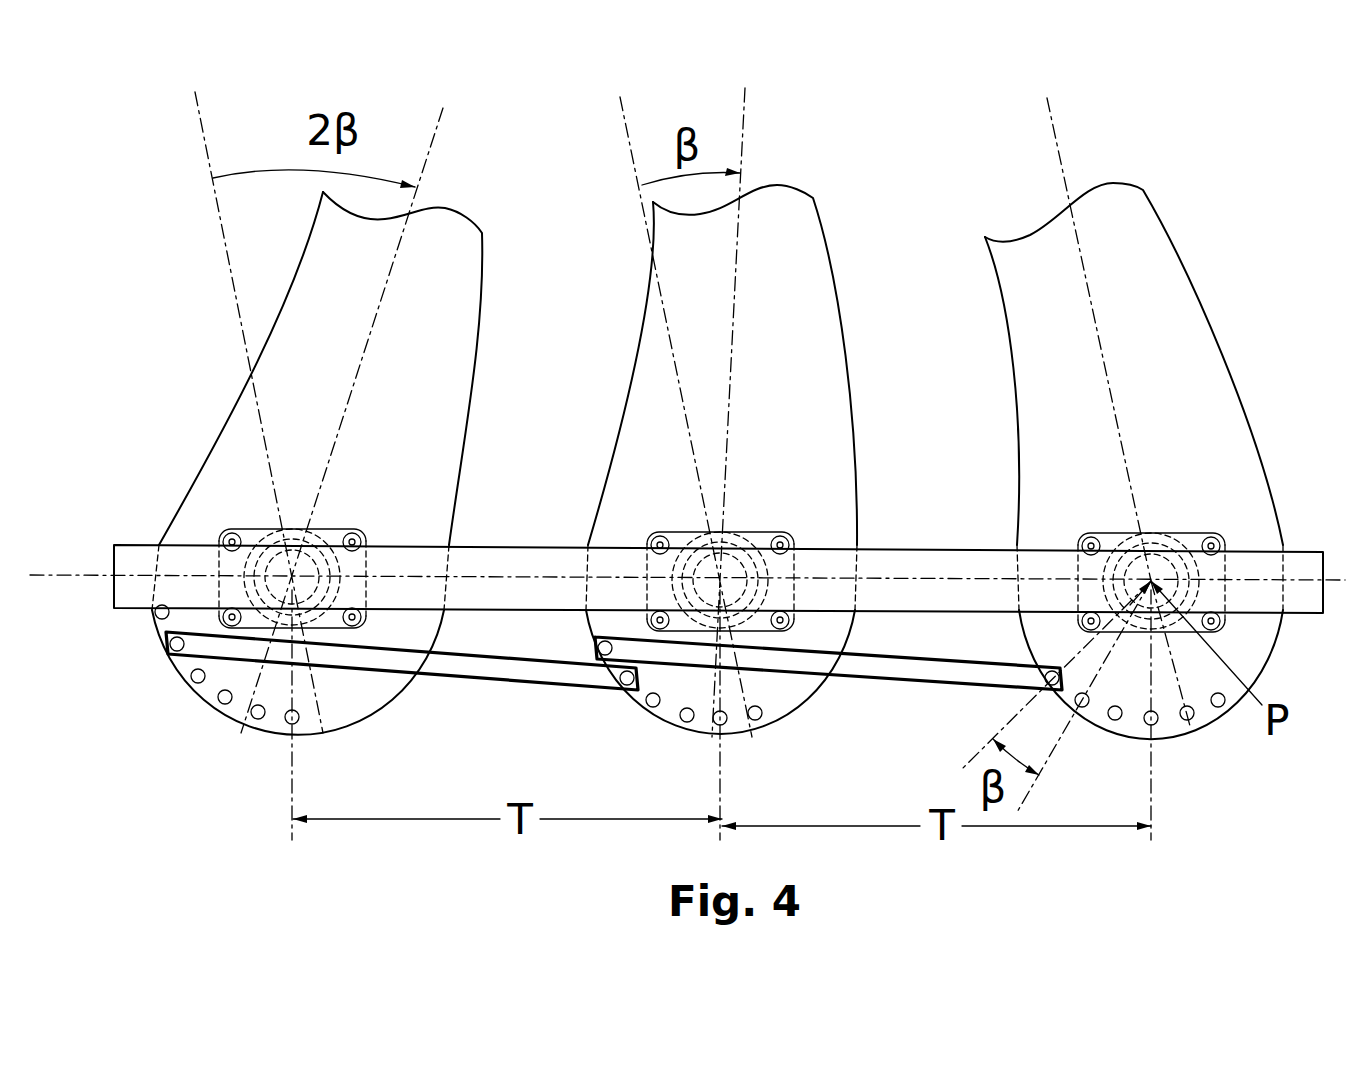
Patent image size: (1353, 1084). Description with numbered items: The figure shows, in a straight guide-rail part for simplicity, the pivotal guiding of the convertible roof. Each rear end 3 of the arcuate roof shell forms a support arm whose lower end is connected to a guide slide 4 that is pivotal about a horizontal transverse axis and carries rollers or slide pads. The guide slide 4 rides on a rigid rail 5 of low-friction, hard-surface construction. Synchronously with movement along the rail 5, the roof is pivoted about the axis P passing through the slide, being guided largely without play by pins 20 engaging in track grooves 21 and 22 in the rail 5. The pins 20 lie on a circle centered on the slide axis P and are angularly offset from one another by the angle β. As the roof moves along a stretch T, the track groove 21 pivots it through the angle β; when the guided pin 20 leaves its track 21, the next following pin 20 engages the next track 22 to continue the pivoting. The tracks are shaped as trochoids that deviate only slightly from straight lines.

The rear end 3 is at (1162, 335).
The guide slide 4 is at (1208, 575).
The rail 5 is at (907, 570).
The pin 20 is at (1215, 708).
The track groove 21 is at (930, 673).
The track groove 22 is at (497, 670).